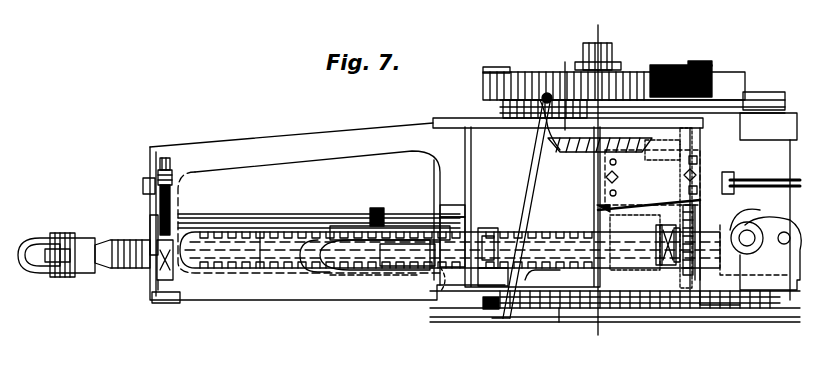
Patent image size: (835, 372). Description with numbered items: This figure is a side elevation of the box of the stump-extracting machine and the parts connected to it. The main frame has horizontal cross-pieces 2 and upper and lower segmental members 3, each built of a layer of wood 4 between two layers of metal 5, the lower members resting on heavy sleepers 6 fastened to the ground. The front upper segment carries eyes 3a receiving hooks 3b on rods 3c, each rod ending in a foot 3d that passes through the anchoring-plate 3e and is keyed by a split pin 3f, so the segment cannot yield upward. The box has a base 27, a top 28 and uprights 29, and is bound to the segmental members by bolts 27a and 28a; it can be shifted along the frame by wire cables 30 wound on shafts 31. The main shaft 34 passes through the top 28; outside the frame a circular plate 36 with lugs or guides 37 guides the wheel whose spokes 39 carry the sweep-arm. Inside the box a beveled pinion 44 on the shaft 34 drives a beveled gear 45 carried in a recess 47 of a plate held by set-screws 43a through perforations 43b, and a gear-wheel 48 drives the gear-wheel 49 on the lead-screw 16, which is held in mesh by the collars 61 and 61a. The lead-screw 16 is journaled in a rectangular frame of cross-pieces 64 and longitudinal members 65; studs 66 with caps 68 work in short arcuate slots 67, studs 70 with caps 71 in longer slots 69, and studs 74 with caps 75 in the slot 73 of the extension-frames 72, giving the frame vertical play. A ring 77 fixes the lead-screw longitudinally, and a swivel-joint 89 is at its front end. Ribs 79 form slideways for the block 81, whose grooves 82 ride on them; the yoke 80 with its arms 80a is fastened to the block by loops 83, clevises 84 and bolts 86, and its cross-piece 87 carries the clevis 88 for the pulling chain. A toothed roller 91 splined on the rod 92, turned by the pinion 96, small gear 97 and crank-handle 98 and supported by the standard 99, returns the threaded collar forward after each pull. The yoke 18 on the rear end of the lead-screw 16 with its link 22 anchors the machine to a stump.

The horizontal cross-pieces 2 is at (750, 209).
The segmental members 3 is at (756, 96).
The eyes 3a is at (559, 151).
The hooks 3b is at (545, 95).
The rods 3c is at (533, 145).
The foot 3d is at (510, 318).
The anchoring-plate 3e is at (497, 318).
The split pin 3f is at (483, 312).
The layer of wood 4 is at (740, 100).
The layers of metal 5 is at (503, 112).
The sleepers 6 is at (560, 322).
The lead-screw 16 is at (260, 232).
The yoke 18 is at (770, 212).
The link 22 is at (790, 300).
The base 27 is at (560, 322).
The bolts 27a is at (546, 274).
The top 28 is at (455, 122).
The bolts 28a is at (594, 167).
The uprights 29 is at (172, 198).
The wire cables 30 is at (648, 185).
The shafts 31 is at (752, 192).
The main shaft 34 is at (612, 46).
The circular plate 36 is at (483, 84).
The lugs or guides 37 is at (495, 68).
The spokes 39 is at (660, 68).
The set-screws 43a is at (652, 177).
The perforations 43b is at (700, 178).
The beveled pinion 44 is at (549, 87).
The beveled gear 45 is at (666, 141).
The recess 47 is at (696, 188).
The gear-wheel 48 is at (696, 158).
The gear-wheel 49 is at (697, 282).
The collar 61 is at (705, 278).
The collar 61a is at (690, 278).
The cross-pieces 64 is at (635, 249).
The longitudinal members 65 is at (450, 250).
The studs 66 is at (668, 265).
The arcuate slots 67 is at (676, 262).
The cap 68 is at (660, 262).
The arcuate slots 69 is at (445, 205).
The studs 70 is at (493, 276).
The caps 71 is at (488, 228).
The extension-frames 72 is at (272, 292).
The slot 73 is at (170, 303).
The studs 74 is at (160, 280).
The caps 75 is at (158, 265).
The ring 77 is at (150, 222).
The ribs or cleats 79 is at (490, 228).
The yoke 80 is at (66, 233).
The longitudinal arms 80a is at (262, 290).
The block 81 is at (400, 268).
The grooves 82 is at (360, 270).
The loops 83 is at (358, 228).
The clevises 84 is at (312, 272).
The bolts 86 is at (424, 301).
The cross-piece 87 is at (55, 262).
The clevis 88 is at (35, 240).
The swivel-joint 89 is at (120, 240).
The externally-toothed roller 91 is at (377, 208).
The rod 92 is at (310, 216).
The pinion 96 is at (163, 158).
The small gear 97 is at (172, 210).
The crank-handle 98 is at (175, 178).
The standard 99 is at (145, 182).